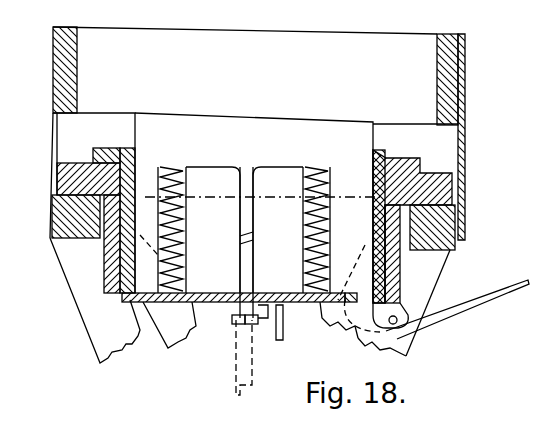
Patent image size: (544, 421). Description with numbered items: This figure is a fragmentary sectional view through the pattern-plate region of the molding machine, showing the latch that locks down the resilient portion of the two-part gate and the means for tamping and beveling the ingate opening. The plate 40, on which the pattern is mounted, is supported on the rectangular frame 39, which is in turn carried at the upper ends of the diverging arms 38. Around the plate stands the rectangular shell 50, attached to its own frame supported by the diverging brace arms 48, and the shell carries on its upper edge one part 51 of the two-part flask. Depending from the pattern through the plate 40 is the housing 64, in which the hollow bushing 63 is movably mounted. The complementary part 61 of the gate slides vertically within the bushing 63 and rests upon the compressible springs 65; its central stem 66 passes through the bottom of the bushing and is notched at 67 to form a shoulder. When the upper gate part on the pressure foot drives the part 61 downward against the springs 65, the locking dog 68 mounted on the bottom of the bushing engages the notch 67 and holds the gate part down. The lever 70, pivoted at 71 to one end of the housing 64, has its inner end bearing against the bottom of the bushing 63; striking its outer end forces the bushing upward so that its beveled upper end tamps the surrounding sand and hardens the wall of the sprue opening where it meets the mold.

The diverging arms 38 is at (168, 348).
The rectangular frame 39 is at (456, 232).
The plate 40 is at (466, 193).
The brace arms 48 is at (90, 338).
The rectangular shell 50 is at (466, 160).
The flask part 51 is at (465, 86).
The complementary gate part 61 is at (254, 165).
The hollow bushing 63 is at (137, 172).
The housing 64 is at (401, 276).
The compressible springs 65 is at (232, 222).
The central stem 66 is at (238, 265).
The notch 67 is at (253, 240).
The locking dog 68 is at (256, 321).
The lever 70 is at (478, 300).
The pivot 71 is at (409, 326).